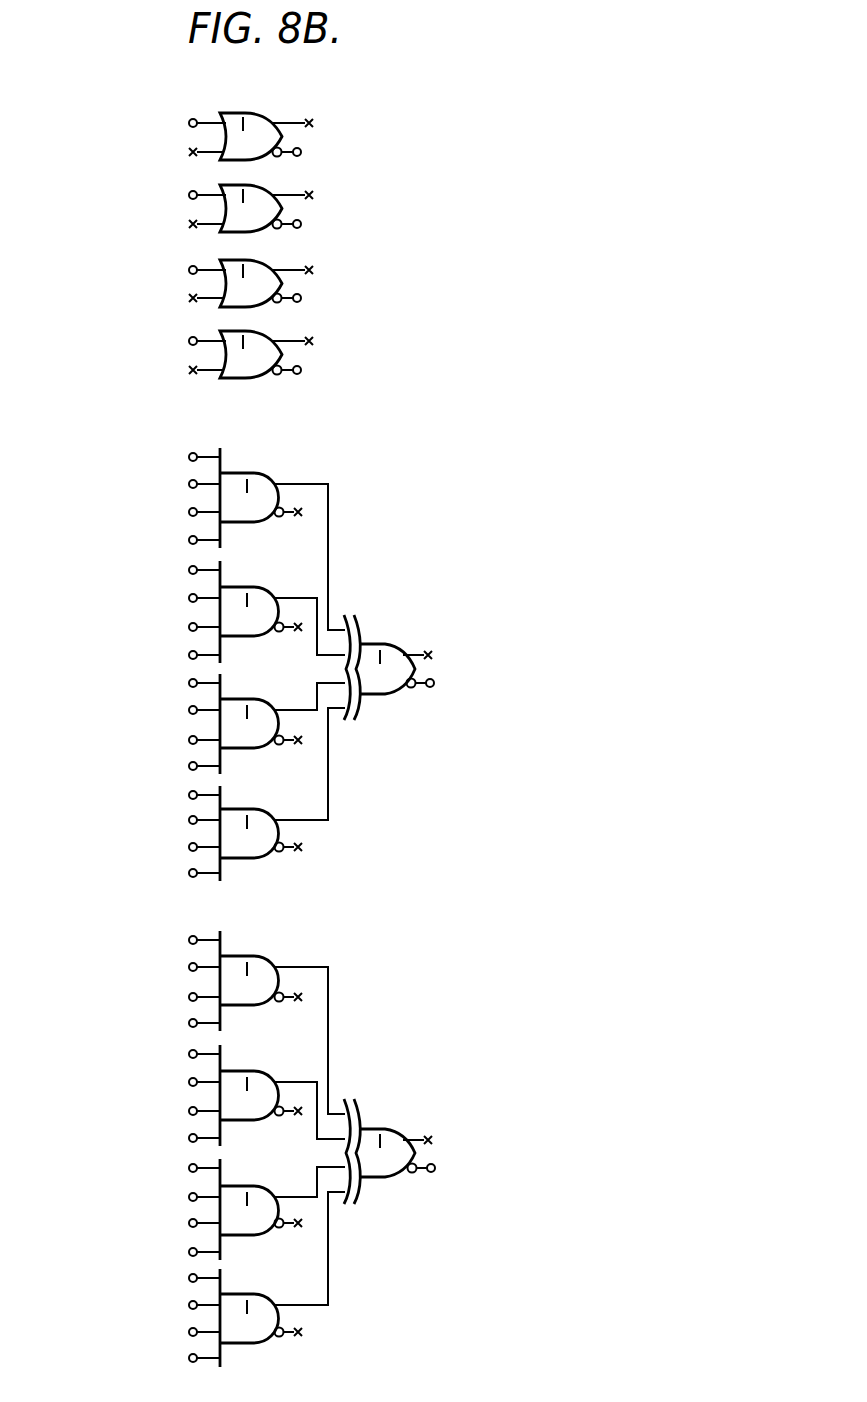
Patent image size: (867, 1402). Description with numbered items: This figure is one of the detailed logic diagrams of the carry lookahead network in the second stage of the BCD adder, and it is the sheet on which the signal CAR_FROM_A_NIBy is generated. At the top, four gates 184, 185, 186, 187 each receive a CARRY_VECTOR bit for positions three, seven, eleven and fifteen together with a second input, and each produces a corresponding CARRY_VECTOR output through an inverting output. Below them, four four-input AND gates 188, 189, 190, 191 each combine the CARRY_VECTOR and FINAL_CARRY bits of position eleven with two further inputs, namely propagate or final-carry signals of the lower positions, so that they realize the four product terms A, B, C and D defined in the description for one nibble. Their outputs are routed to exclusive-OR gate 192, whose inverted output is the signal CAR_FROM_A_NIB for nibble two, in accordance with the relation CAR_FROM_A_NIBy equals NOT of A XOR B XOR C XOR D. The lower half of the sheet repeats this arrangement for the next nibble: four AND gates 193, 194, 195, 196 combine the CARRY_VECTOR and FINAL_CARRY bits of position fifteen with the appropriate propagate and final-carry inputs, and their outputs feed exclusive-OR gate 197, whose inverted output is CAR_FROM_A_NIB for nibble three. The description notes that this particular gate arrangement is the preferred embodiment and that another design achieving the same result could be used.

The OR gate L950 184 is at (249, 113).
The OR gate L951 185 is at (251, 185).
The OR gate L952 186 is at (252, 259).
The OR gate L953 187 is at (225, 380).
The AND gate L980 188 is at (255, 473).
The AND gate L981 189 is at (265, 587).
The AND gate L982 190 is at (251, 699).
The AND gate L983 191 is at (259, 809).
The XOR gate L988 192 is at (372, 645).
The AND gate L984 193 is at (266, 956).
The AND gate L985 194 is at (261, 1071).
The AND gate L986 195 is at (259, 1186).
The AND gate L987 196 is at (243, 1294).
The XOR gate L989 197 is at (376, 1129).